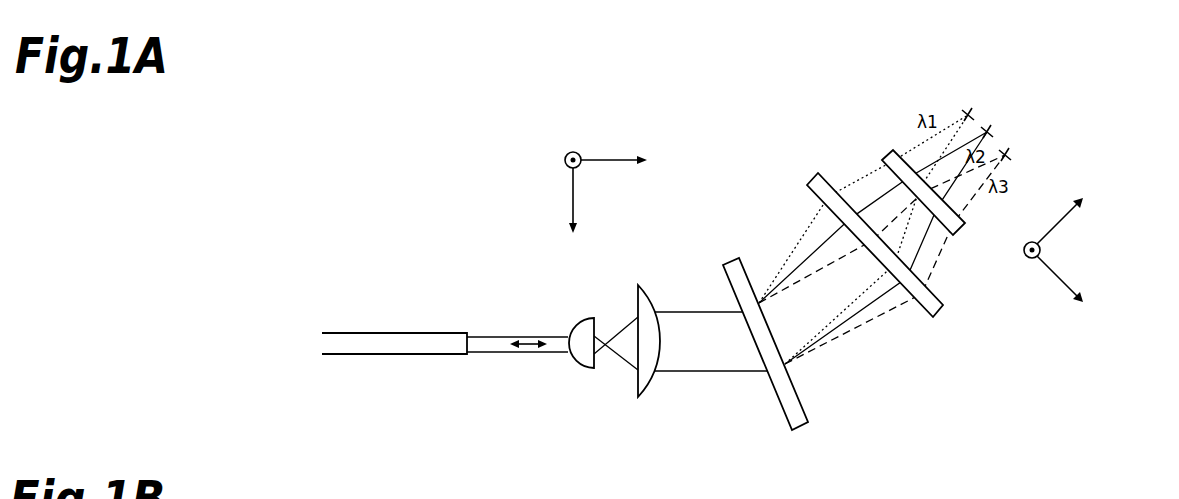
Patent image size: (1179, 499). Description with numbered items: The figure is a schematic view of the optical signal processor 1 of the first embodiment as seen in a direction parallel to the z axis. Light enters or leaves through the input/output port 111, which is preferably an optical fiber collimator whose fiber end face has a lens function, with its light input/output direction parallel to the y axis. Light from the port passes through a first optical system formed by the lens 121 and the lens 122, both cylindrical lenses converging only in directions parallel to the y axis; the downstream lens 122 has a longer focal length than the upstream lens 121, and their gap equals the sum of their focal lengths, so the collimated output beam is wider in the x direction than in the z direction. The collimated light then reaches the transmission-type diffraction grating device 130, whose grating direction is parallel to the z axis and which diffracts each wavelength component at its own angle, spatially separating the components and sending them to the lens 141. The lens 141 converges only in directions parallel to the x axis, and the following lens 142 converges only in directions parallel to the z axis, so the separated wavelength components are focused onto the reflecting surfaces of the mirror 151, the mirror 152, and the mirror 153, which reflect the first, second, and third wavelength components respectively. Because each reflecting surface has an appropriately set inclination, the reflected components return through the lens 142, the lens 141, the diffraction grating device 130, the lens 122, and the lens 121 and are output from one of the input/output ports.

The optical signal processor 1 is at (748, 130).
The input/output port 111 is at (390, 345).
The lens 121 is at (582, 357).
The lens 122 is at (645, 387).
The diffraction grating device 130 is at (797, 430).
The lens 141 is at (935, 315).
The lens 142 is at (955, 233).
The mirror 151 is at (974, 112).
The mirror 152 is at (993, 130).
The mirror 153 is at (1011, 153).